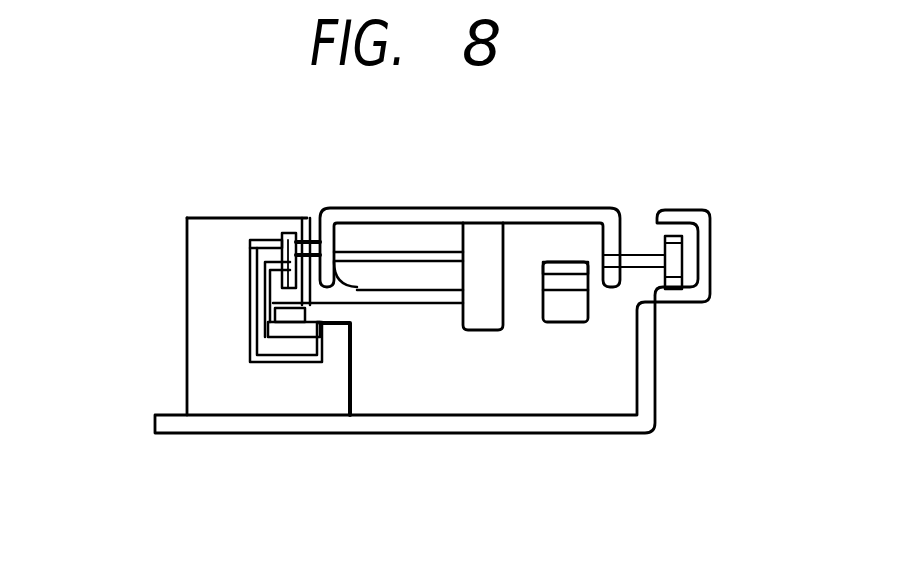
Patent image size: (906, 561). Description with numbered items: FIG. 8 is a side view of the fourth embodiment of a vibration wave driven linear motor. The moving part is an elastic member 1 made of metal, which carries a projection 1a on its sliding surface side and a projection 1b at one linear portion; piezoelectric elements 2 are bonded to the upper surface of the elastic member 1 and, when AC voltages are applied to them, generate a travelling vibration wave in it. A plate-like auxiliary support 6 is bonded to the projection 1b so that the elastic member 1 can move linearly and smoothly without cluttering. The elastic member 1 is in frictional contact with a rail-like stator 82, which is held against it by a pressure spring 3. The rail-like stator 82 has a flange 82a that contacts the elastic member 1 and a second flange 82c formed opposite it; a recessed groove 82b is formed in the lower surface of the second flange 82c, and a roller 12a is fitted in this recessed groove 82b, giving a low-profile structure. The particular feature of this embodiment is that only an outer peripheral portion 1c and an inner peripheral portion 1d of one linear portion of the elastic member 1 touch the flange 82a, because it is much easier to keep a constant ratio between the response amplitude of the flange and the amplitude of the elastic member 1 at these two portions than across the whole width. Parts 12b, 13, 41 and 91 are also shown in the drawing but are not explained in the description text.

The elastic member 1 is at (588, 292).
The projection 1a is at (555, 310).
The projection 1b is at (357, 270).
The outer peripheral portion 1c is at (275, 307).
The inner peripheral portion 1d is at (352, 323).
The piezoelectric elements 2 is at (565, 262).
The pressure spring 3 is at (392, 253).
The plate-like auxiliary support 6 is at (420, 303).
The roller 12a is at (250, 278).
The right support member 12b is at (672, 260).
The bearing 13 is at (300, 240).
The slider block 41 is at (492, 218).
The rail-like stator 82 is at (205, 346).
The flange 82a is at (303, 335).
The recessed groove 82b is at (248, 243).
The second flange 82c is at (232, 226).
The base plate 91 is at (558, 425).